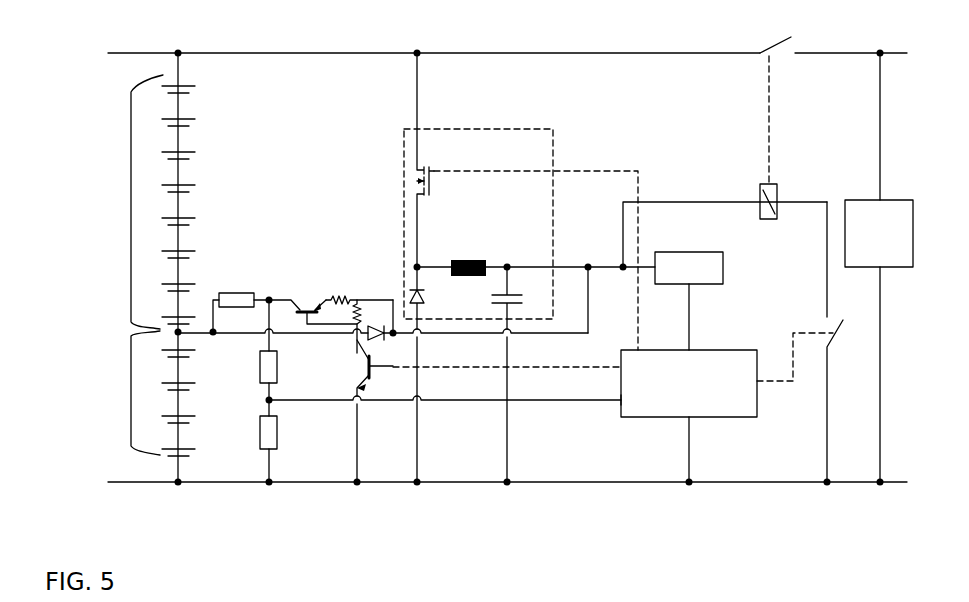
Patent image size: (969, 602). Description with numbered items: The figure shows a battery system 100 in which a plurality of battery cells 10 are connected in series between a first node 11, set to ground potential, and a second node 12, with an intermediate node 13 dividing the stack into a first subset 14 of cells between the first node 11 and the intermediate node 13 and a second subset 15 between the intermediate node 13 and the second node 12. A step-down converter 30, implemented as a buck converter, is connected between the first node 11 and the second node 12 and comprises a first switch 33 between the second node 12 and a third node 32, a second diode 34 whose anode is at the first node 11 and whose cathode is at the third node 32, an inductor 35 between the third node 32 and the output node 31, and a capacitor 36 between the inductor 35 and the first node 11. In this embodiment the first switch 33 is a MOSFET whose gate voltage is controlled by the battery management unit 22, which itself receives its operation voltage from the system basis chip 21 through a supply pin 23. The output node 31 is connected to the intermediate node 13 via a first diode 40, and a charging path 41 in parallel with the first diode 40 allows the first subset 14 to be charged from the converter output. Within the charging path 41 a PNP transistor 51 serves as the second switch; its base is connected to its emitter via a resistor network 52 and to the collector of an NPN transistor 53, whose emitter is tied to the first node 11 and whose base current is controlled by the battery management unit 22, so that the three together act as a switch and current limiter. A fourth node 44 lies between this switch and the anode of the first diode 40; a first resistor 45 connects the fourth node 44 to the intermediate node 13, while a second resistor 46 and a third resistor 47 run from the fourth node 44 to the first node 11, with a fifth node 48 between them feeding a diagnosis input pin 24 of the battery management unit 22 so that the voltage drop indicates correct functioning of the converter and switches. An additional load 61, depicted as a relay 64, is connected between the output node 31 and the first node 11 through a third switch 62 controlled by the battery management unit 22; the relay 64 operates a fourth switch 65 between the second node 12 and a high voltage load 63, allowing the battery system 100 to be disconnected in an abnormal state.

The battery cell 10 is at (185, 119).
The first node 11 is at (178, 484).
The second node 12 is at (180, 52).
The intermediate node 13 is at (179, 331).
The first subset 14 is at (130, 392).
The second subset 15 is at (130, 202).
The system basis chip 21 is at (694, 252).
The battery management unit 22 is at (740, 349).
The supply pin 23 is at (693, 349).
The diagnosis input pin 24 is at (621, 400).
The step-down converter 30 is at (489, 129).
The output node 31 is at (588, 266).
The third node 32 is at (416, 266).
The first switch 33 is at (418, 181).
The second diode 34 is at (422, 300).
The inductor 35 is at (465, 260).
The capacitor 36 is at (510, 305).
The first diode 40 is at (378, 336).
The charging path 41 is at (393, 300).
The fourth node 44 is at (269, 299).
The first resistor 45 is at (226, 293).
The second resistor 46 is at (260, 366).
The third resistor 47 is at (260, 432).
The fifth node 48 is at (270, 400).
The PNP transistor 51 is at (303, 303).
The resistor network 52 is at (358, 300).
The NPN transistor 53 is at (355, 366).
The additional load 61 is at (811, 180).
The third switch 62 is at (836, 340).
The high voltage load 63 is at (887, 199).
The relay 64 is at (777, 183).
The fourth switch 65 is at (785, 40).
The battery system 100 is at (889, 109).